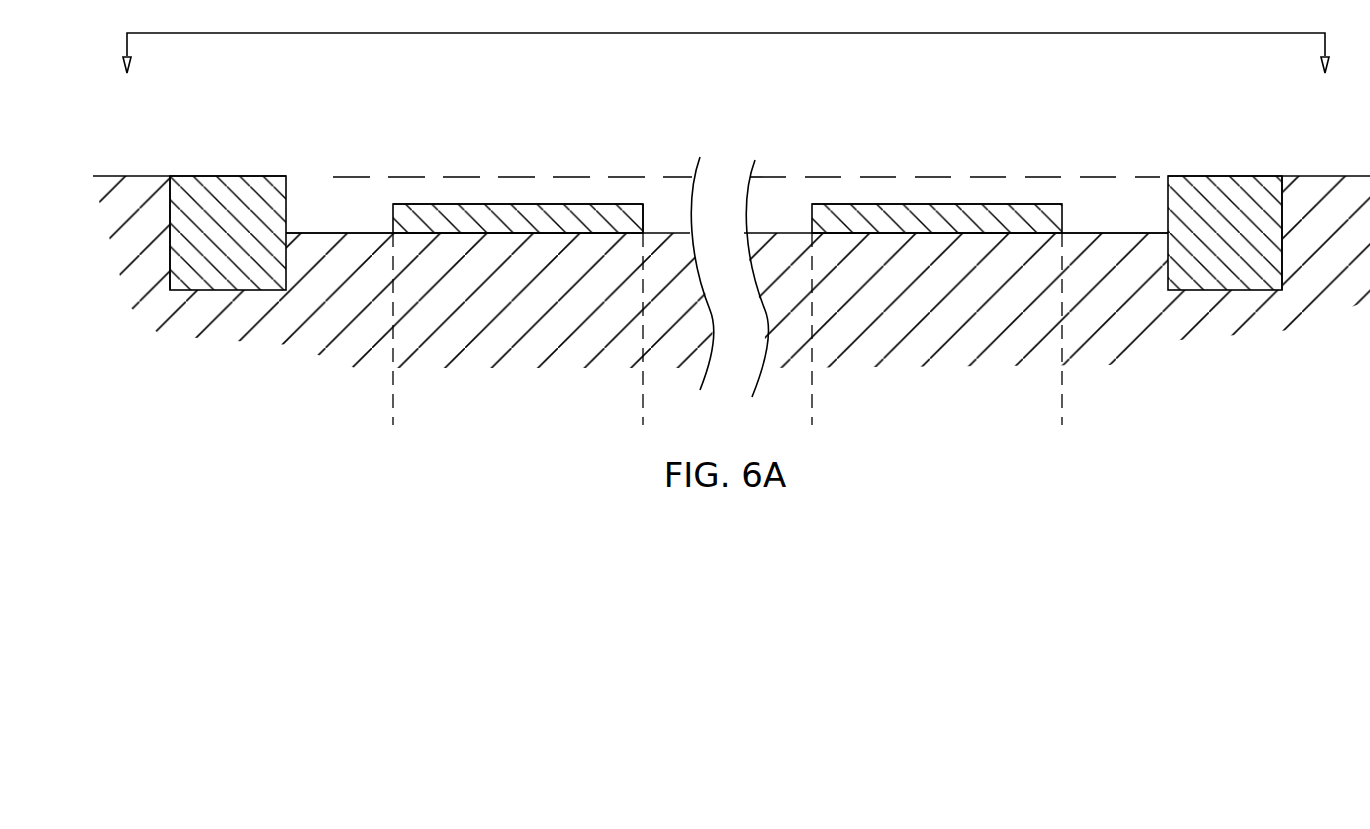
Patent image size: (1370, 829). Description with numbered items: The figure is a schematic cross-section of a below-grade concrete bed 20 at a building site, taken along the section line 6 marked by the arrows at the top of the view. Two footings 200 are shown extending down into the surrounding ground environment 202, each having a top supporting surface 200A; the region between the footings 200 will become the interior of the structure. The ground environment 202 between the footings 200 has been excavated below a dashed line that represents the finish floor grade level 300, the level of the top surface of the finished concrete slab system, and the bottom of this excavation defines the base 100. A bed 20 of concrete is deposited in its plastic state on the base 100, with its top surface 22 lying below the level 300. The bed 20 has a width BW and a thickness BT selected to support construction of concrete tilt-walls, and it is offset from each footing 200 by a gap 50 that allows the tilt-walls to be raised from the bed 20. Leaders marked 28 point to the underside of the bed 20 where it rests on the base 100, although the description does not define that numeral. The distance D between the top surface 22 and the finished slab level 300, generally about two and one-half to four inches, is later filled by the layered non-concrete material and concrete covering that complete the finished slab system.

The cross-section line 6 is at (726, 68).
The bed 20 is at (728, 285).
The top surface 22 is at (580, 203).
The bond pad bottom interface 28 is at (450, 235).
The gap 50 is at (317, 200).
The base 100 is at (645, 225).
The footing 200 is at (728, 272).
The top supporting surface 200A is at (205, 175).
The ground environment 202 is at (322, 323).
The finish floor grade level 300 is at (477, 175).
The thickness BT is at (404, 262).
The width BW is at (643, 400).
The distance D is at (551, 250).